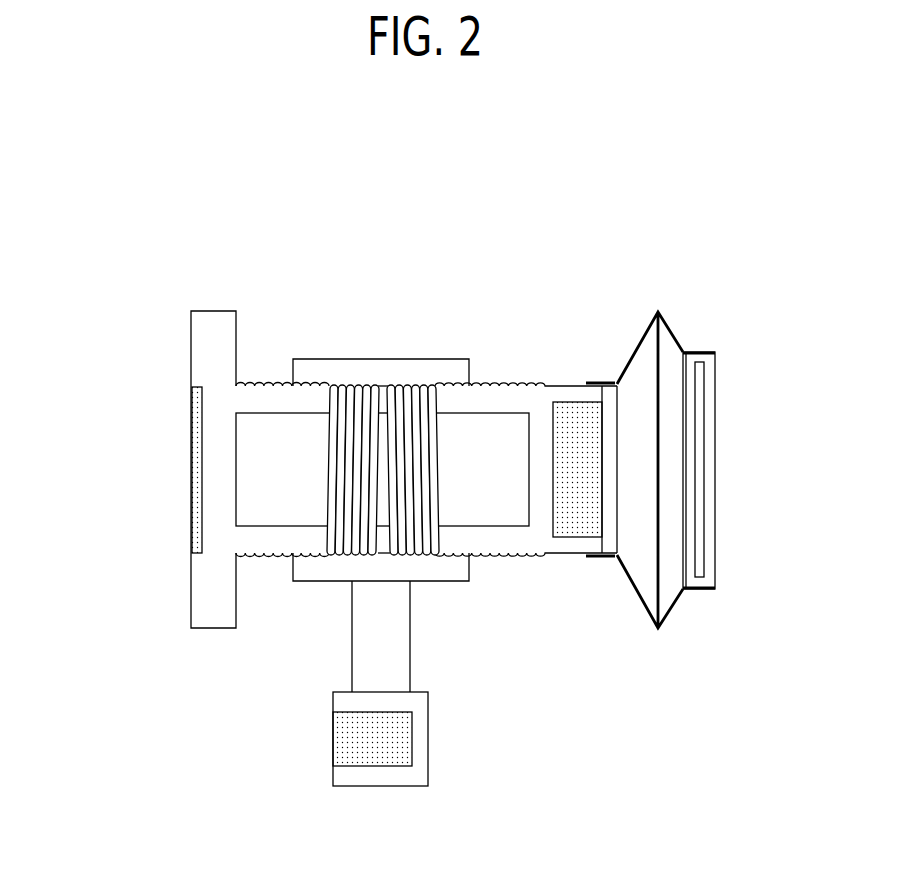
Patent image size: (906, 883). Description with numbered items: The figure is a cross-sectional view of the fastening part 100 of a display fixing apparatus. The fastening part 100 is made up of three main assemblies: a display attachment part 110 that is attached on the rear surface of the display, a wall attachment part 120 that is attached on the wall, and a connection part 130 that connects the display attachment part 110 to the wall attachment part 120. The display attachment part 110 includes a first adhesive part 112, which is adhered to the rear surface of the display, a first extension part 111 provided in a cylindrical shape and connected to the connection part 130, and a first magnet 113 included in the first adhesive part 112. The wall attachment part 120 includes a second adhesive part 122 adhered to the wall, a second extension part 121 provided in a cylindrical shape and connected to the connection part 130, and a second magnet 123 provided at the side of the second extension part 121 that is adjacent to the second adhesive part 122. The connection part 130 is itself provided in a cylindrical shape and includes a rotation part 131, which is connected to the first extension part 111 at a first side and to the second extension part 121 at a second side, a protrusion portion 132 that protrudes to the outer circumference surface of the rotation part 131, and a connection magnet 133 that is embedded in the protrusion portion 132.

The fastening part 100 is at (142, 263).
The display attachment part 110 is at (133, 695).
The first extension part 111 is at (260, 553).
The first adhesive part 112 is at (208, 628).
The first magnet 113 is at (192, 488).
The wall attachment part 120 is at (567, 843).
The second extension part 121 is at (516, 554).
The second adhesive part 122 is at (693, 589).
The second magnet 123 is at (575, 497).
The connection part 130 is at (515, 843).
The rotation part 131 is at (446, 581).
The protrusion portion 132 is at (428, 738).
The connection magnet 133 is at (383, 767).